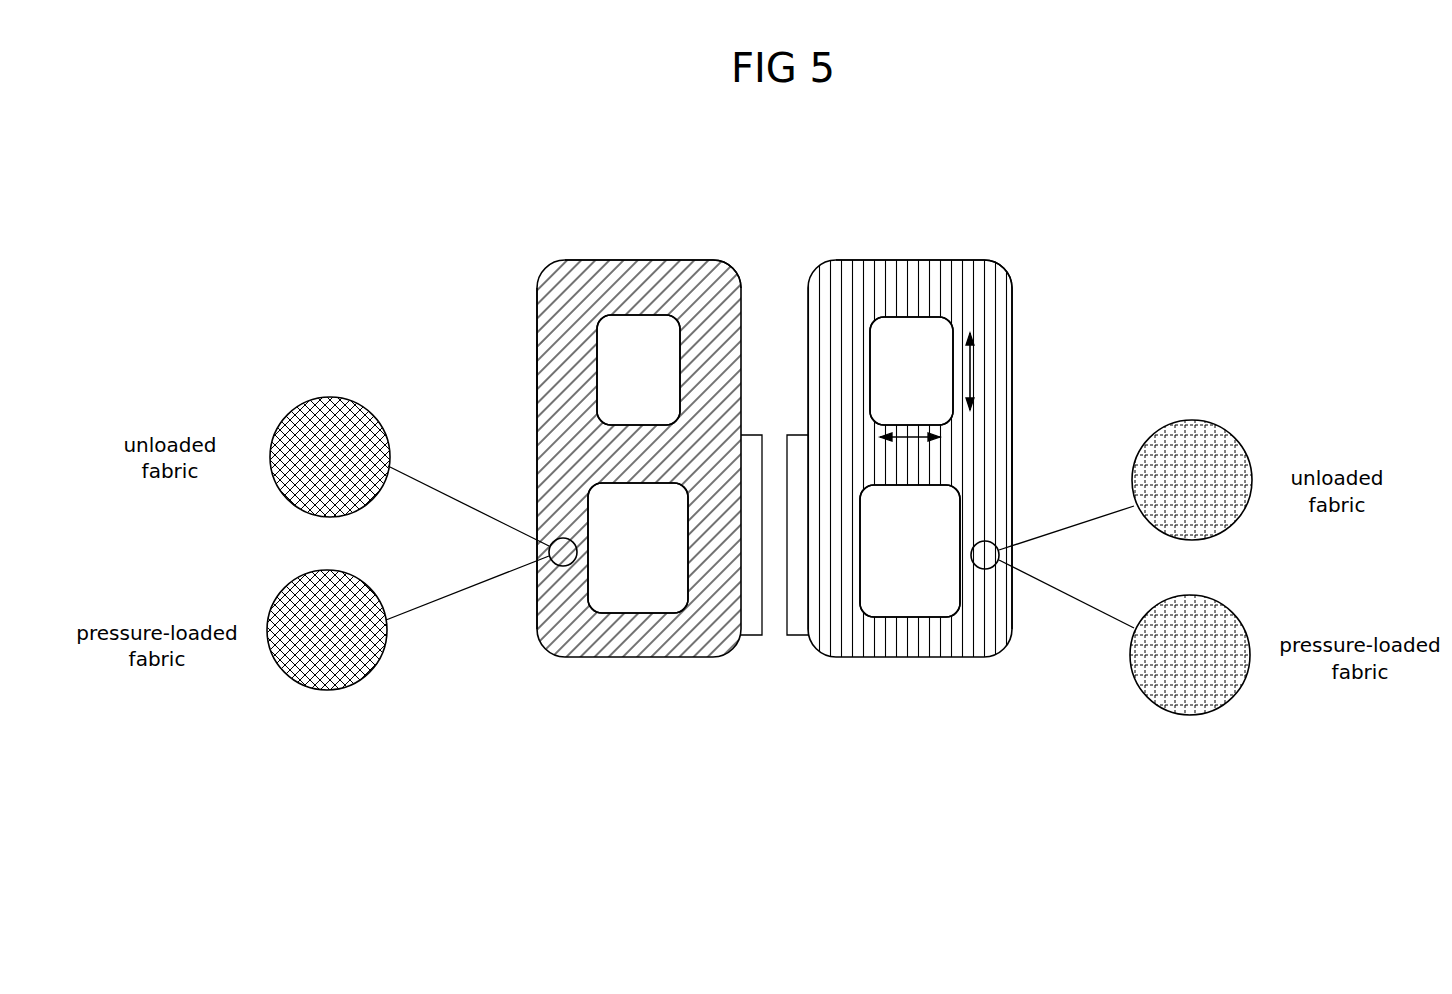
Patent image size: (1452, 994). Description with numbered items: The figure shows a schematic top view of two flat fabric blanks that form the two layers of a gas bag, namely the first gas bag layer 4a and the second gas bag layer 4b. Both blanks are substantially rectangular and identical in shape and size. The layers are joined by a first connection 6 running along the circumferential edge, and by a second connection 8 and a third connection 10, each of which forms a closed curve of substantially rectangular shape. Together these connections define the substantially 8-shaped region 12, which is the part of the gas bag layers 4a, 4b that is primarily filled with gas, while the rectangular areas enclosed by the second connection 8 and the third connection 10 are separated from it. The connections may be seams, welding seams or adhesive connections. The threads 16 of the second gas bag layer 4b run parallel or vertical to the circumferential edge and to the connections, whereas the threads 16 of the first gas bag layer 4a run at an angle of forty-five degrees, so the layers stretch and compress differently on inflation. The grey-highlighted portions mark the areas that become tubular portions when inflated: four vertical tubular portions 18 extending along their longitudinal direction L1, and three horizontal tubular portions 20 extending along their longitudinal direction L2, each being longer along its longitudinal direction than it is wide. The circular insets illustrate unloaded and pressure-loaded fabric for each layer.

The first gas bag layer 4a is at (586, 260).
The second gas bag layer 4b is at (940, 262).
The first connection 6 is at (537, 318).
The second connection 8 is at (668, 316).
The third connection 10 is at (656, 488).
The 8-shaped region 12 is at (545, 290).
The threads 16 is at (550, 372).
The vertical tubular portions 18 is at (540, 398).
The horizontal tubular portions 20 is at (636, 286).
The longitudinal direction of the vertical tubular portions L1 is at (983, 371).
The longitudinal direction of the horizontal tubular portions L2 is at (910, 452).